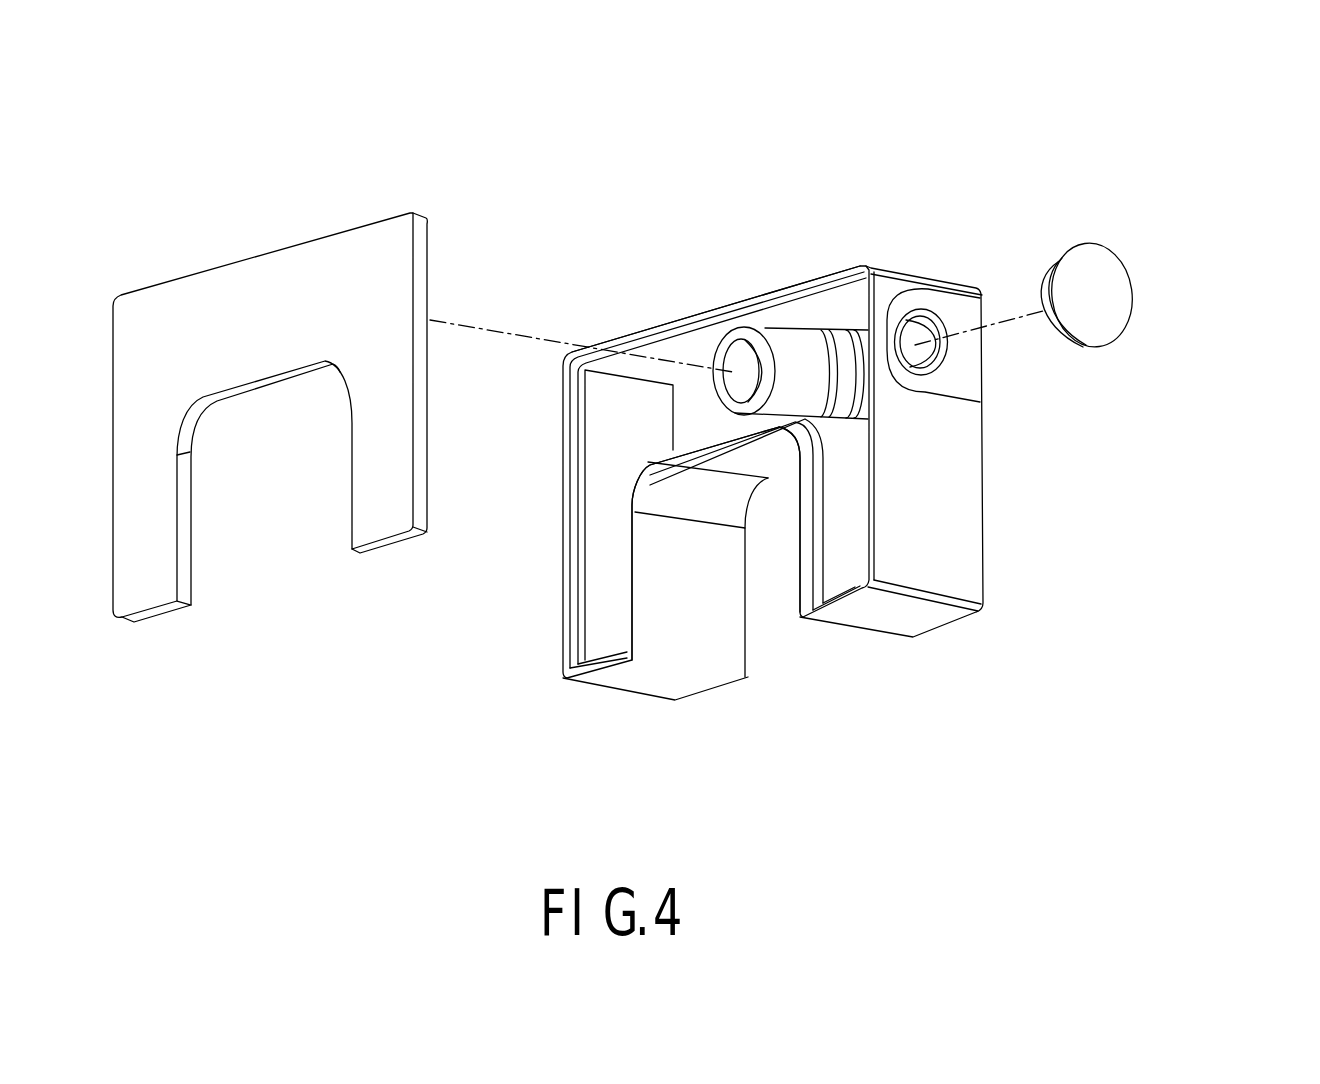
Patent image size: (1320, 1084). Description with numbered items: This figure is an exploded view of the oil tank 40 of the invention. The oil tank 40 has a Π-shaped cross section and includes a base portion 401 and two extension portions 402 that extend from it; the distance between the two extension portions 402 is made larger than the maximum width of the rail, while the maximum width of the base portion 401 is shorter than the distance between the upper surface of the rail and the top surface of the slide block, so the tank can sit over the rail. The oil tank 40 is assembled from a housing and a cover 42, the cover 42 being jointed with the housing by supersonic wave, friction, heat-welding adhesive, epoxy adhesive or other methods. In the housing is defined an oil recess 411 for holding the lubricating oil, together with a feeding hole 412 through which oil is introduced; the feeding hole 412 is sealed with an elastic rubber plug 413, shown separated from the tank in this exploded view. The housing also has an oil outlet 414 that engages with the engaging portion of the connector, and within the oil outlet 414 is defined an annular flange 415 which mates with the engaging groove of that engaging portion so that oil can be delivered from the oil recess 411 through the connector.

The oil tank 40 is at (845, 378).
The cover 42 is at (242, 264).
The base portion 401 is at (771, 289).
The extension portions 402 is at (955, 519).
The oil recess 411 is at (845, 546).
The feeding hole 412 is at (920, 355).
The elastic rubber plug 413 is at (1098, 295).
The oil outlet 414 is at (732, 373).
The annular flange 415 is at (748, 357).